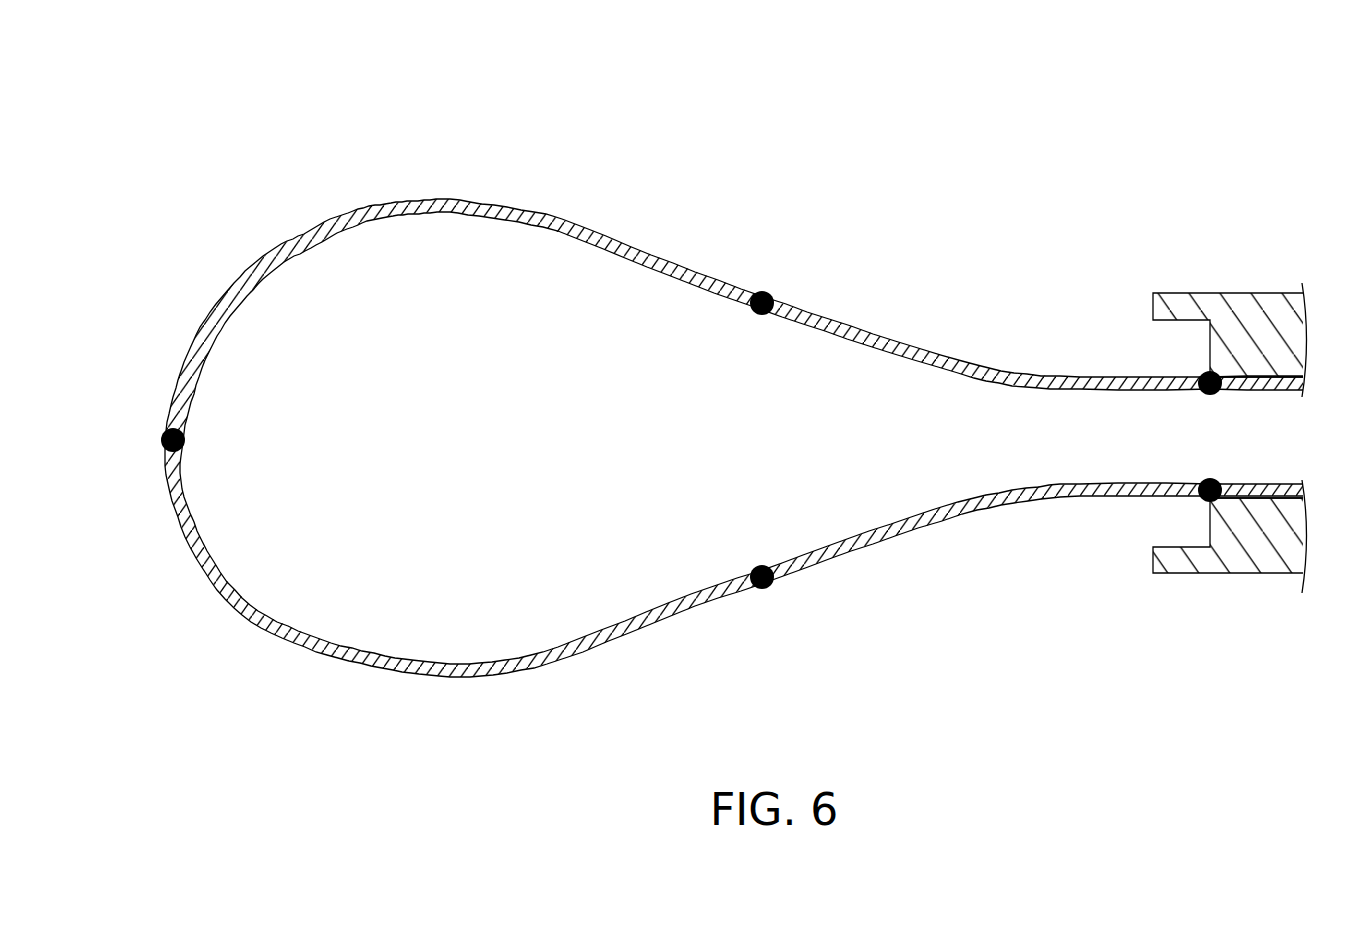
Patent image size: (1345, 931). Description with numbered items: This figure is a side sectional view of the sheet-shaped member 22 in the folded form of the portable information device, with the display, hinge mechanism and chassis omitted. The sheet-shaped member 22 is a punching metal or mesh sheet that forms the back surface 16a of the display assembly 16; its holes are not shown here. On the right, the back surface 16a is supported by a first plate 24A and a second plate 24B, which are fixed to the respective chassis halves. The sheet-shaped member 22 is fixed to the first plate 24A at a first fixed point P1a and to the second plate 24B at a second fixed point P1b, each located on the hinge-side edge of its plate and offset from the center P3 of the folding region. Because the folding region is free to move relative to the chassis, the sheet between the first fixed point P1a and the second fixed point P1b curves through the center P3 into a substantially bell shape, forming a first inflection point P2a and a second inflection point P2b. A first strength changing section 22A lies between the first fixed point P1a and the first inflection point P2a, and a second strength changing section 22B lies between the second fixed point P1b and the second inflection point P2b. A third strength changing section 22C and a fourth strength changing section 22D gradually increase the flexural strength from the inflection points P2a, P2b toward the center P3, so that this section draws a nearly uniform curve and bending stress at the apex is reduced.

The sheet-shaped member 22 is at (286, 71).
The display assembly 16 is at (334, 71).
The back surface 16a is at (1266, 377).
The first strength changing section 22A is at (998, 354).
The second strength changing section 22B is at (998, 532).
The third strength changing section 22C is at (430, 180).
The fourth strength changing section 22D is at (430, 702).
The first plate 24A is at (1240, 316).
The second plate 24B is at (1240, 554).
The first fixed point P1a is at (1207, 393).
The second fixed point P1b is at (1207, 479).
The first inflection point P2a is at (764, 293).
The second inflection point P2b is at (763, 590).
The center of the folding region P3 is at (162, 441).